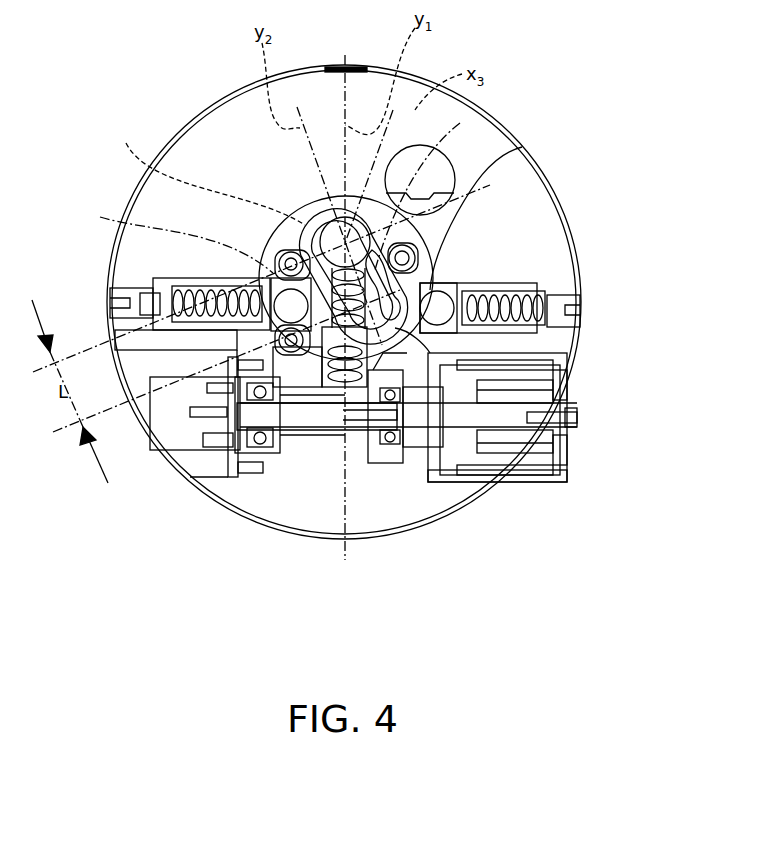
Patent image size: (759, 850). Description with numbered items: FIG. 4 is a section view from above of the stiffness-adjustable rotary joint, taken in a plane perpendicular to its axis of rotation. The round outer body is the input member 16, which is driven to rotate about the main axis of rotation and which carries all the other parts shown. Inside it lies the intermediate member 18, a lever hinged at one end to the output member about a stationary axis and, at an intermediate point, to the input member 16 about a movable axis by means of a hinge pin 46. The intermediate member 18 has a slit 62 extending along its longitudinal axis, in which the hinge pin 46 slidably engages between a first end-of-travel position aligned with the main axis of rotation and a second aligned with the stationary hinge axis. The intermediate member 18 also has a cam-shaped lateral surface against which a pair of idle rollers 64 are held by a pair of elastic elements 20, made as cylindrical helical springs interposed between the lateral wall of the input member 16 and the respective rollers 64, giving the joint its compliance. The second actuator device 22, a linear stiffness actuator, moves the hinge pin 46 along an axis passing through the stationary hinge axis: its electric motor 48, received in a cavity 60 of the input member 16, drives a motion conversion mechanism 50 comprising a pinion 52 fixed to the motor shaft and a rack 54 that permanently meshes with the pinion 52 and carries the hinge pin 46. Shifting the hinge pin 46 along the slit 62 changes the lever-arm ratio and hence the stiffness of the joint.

The input member 16 is at (202, 135).
The intermediate member 18 is at (522, 147).
The elastic elements 20 is at (153, 280).
The second actuator device 22 is at (463, 484).
The hinge pin 46 is at (446, 150).
The electric motor 48 is at (533, 483).
The motion conversion mechanism 50 is at (300, 460).
The pinion 52 is at (316, 455).
The rack 54 is at (283, 453).
The cavity 60 is at (570, 390).
The slit 62 is at (209, 173).
The idle rollers 64 is at (280, 262).